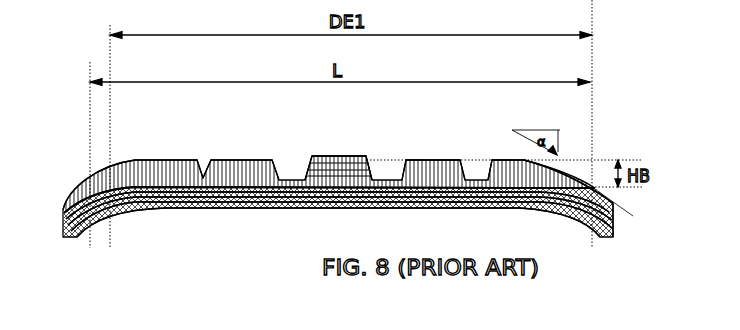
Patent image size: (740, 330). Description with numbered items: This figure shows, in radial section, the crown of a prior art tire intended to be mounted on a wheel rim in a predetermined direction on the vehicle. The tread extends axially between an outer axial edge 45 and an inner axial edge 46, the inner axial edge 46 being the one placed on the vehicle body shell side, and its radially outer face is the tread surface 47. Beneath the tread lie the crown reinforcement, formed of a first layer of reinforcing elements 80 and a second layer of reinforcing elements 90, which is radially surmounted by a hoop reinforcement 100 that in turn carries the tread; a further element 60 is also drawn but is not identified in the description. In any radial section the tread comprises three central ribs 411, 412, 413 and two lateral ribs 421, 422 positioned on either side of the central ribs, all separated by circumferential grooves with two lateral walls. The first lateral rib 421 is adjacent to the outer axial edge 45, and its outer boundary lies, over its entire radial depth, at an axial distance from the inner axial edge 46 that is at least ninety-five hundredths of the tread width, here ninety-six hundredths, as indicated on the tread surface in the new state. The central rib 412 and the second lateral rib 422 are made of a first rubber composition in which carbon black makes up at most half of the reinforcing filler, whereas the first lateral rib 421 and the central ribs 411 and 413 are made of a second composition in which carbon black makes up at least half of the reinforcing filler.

The outer axial edge 45 is at (86, 176).
The inner axial edge 46 is at (593, 181).
The tread surface 47 is at (321, 150).
The base substrate layer 60 is at (105, 207).
The first layer of reinforcing elements 80 is at (169, 209).
The second layer of reinforcing elements 90 is at (208, 209).
The hoop reinforcement 100 is at (242, 186).
The central rib 411 is at (226, 160).
The central rib 412 is at (347, 172).
The central rib 413 is at (421, 156).
The first lateral rib 421 is at (180, 157).
The second lateral rib 422 is at (510, 165).